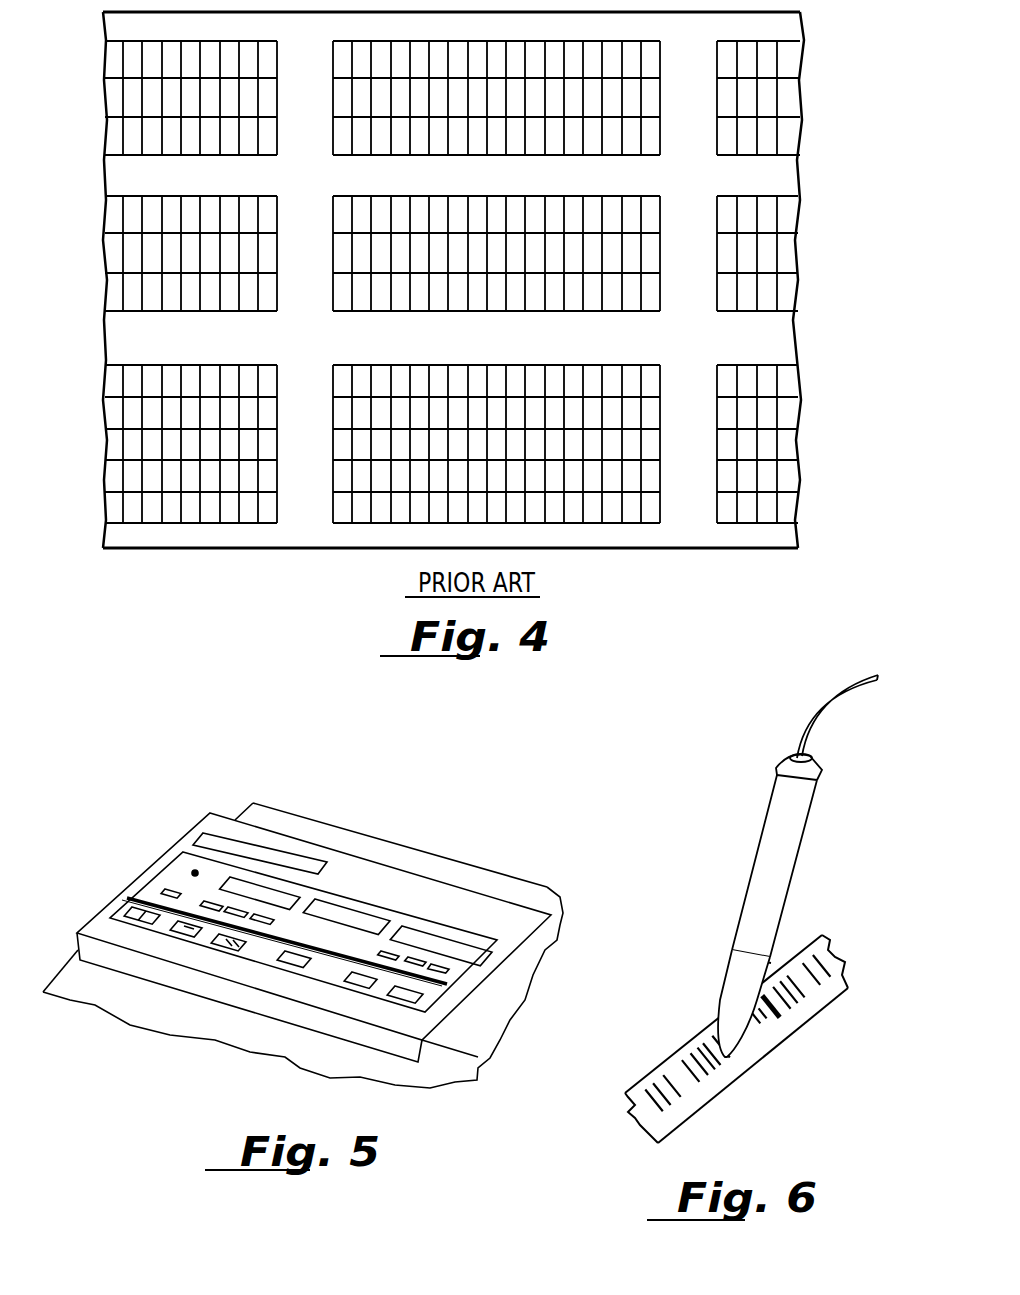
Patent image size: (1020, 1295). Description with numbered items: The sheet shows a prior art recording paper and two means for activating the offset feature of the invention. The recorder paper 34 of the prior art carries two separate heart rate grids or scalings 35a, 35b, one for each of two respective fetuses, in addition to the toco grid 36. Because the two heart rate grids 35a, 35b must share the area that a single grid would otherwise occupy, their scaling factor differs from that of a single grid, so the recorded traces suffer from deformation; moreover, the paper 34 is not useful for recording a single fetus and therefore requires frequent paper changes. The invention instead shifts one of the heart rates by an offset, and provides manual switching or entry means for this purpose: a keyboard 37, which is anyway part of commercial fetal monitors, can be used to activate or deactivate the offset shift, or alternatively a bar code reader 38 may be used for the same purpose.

In FIG. 4, the recorder paper 34 is at (786, 342).
In FIG. 4, the heart rate grid 35a is at (795, 103).
In FIG. 4, the heart rate grid 35b is at (790, 258).
In FIG. 4, the toco grid 36 is at (790, 450).
In FIG. 5, the keyboard 37 is at (310, 903).
In FIG. 6, the bar code reader 38 is at (765, 872).